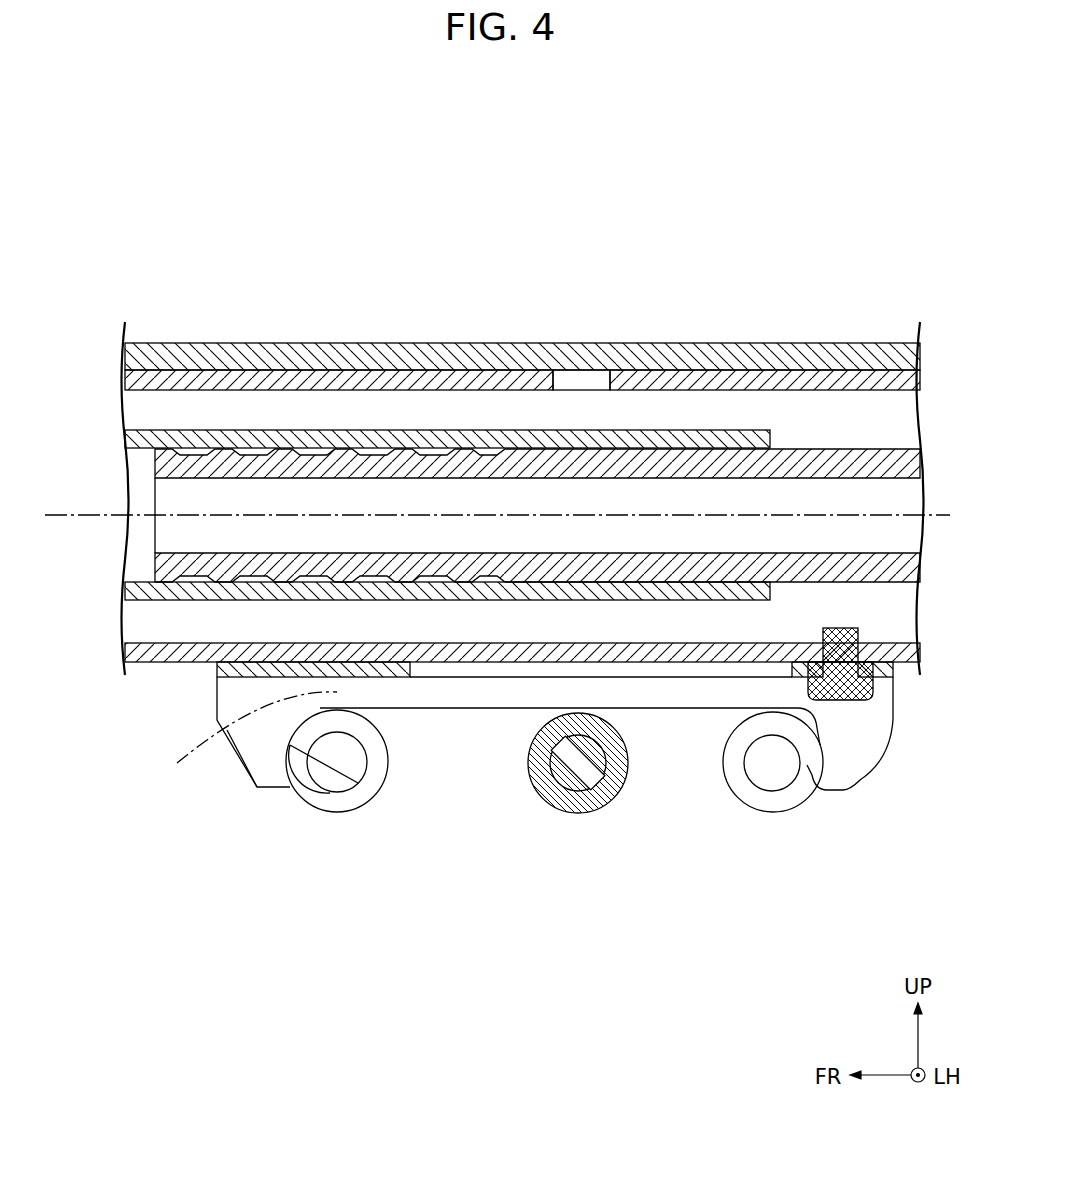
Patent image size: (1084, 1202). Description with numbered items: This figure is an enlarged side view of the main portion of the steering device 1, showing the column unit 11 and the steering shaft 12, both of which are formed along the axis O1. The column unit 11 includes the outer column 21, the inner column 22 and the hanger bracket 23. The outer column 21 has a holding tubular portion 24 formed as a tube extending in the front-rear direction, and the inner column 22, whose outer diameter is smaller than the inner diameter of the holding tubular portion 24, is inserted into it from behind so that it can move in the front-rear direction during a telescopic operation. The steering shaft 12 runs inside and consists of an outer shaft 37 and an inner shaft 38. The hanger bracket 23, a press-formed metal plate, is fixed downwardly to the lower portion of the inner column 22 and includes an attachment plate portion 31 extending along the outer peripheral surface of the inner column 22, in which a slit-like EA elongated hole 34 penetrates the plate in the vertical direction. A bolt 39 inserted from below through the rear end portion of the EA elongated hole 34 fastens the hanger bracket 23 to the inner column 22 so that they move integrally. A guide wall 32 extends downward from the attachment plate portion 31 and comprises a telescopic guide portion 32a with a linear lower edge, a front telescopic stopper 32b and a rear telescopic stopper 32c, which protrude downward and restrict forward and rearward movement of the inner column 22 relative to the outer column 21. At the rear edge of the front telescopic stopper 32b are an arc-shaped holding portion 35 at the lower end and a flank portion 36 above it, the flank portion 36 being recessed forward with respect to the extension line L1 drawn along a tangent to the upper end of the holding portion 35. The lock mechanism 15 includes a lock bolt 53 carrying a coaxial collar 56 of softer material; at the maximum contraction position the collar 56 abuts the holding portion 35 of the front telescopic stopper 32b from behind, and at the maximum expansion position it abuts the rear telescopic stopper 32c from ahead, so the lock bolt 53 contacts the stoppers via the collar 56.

The steering device 1 is at (870, 250).
The column unit 11 is at (510, 224).
The steering shaft 12 is at (725, 224).
The outer column 21 is at (435, 340).
The inner column 22 is at (472, 364).
The holding tubular portion 24 is at (270, 343).
The outer shaft 37 is at (712, 430).
The inner shaft 38 is at (750, 462).
The attachment plate portion 31 is at (217, 670).
The hanger bracket 23 is at (526, 767).
The guide wall 32 is at (559, 767).
The telescopic guide portion 32a is at (500, 690).
The front telescopic stopper 32b is at (270, 770).
The rear telescopic stopper 32c is at (867, 787).
The EA elongated hole 34 is at (688, 665).
The holding portion 35 is at (335, 793).
The flank portion 36 is at (356, 788).
The bolt 39 is at (880, 688).
The lock mechanism 15 is at (663, 839).
The lock bolt 53 is at (600, 793).
The collar 56 is at (307, 808).
The axis O1 is at (95, 518).
The extension line L1 is at (236, 737).